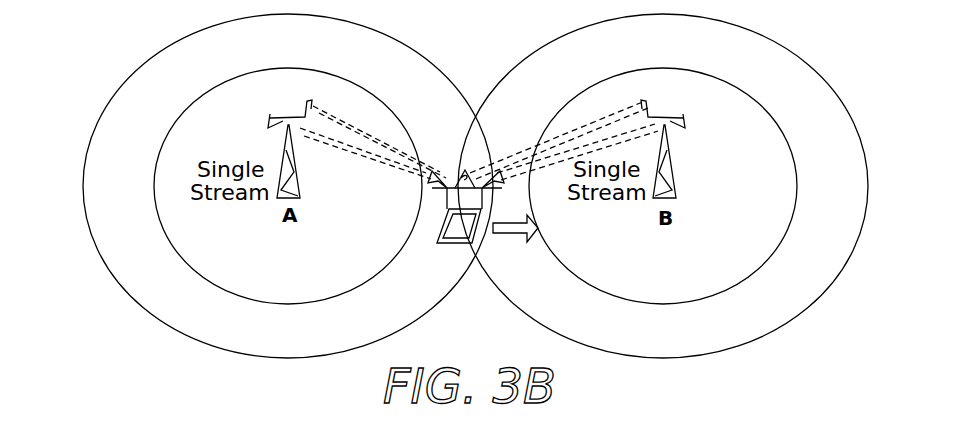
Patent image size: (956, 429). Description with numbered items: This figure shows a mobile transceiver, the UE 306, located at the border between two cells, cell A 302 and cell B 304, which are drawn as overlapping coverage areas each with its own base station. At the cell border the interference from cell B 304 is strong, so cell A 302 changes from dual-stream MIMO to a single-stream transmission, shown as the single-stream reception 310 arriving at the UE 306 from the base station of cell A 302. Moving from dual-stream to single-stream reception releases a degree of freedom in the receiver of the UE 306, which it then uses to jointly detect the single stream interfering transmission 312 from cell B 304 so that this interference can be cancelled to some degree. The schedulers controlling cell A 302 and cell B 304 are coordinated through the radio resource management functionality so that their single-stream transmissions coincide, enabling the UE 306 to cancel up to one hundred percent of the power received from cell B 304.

The cell A 302 is at (117, 93).
The cell B 304 is at (797, 313).
The UE 306 is at (450, 243).
The single-stream reception from cell A 310 is at (375, 140).
The single stream interfering transmission from cell B 312 is at (582, 127).